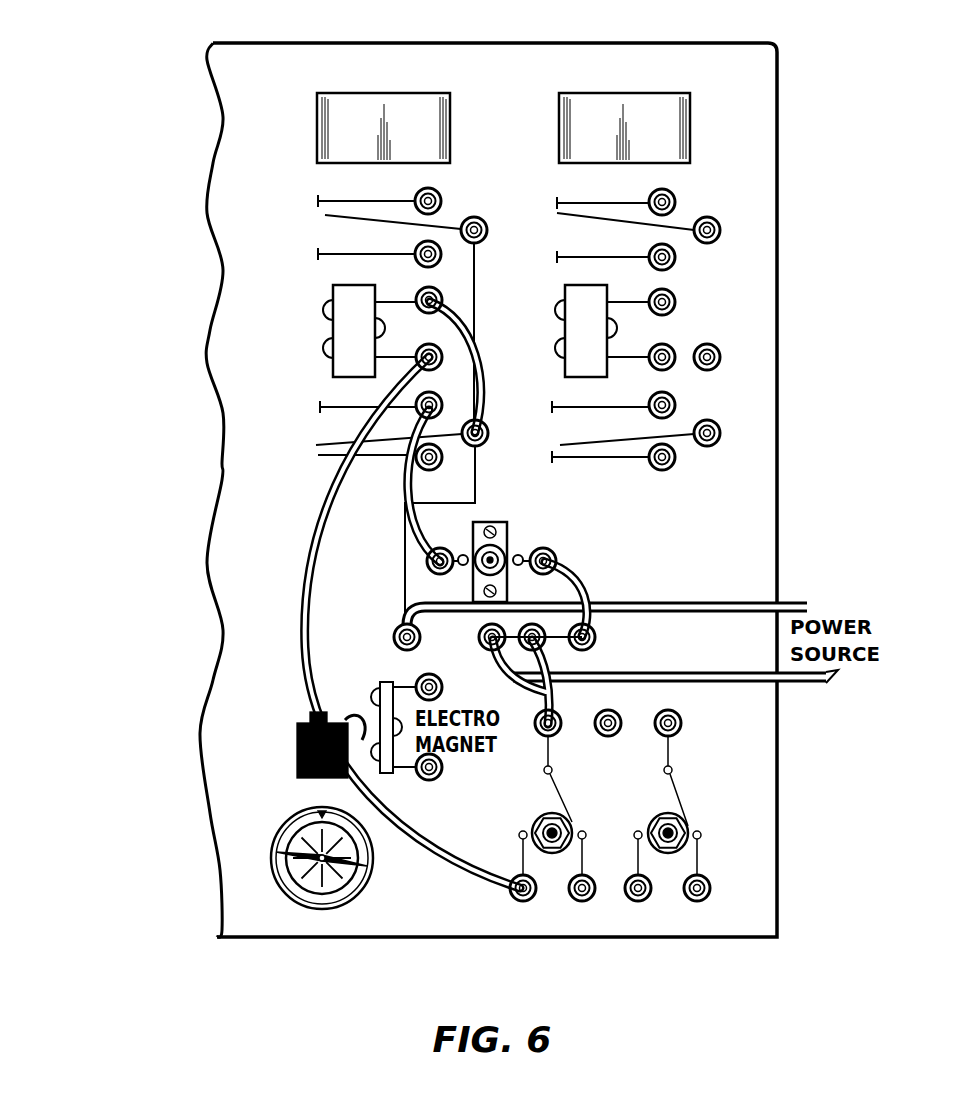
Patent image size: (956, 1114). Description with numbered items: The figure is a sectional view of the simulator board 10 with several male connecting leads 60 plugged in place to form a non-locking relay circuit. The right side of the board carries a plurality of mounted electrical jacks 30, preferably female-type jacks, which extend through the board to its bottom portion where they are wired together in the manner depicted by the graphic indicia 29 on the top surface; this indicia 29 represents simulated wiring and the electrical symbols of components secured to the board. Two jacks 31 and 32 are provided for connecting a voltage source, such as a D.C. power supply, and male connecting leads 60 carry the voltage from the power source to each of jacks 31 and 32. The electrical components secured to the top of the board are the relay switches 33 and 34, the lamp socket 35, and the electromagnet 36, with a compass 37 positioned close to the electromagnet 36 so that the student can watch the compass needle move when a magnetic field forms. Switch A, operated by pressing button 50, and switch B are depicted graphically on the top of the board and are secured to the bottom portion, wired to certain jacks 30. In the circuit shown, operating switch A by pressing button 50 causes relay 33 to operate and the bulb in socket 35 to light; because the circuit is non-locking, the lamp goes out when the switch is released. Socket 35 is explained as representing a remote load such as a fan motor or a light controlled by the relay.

The simulator board 10 is at (556, 43).
The graphic indicia 29 is at (318, 247).
The electrical jacks 30 is at (473, 216).
The jack 31 is at (393, 638).
The jack 32 is at (479, 637).
The relay switch 33 is at (393, 93).
The relay switch 34 is at (660, 93).
The lamp socket 35 is at (507, 528).
The electromagnet 36 is at (296, 750).
The compass 37 is at (368, 884).
The button 50 is at (538, 822).
The male connecting leads 60 is at (484, 375).